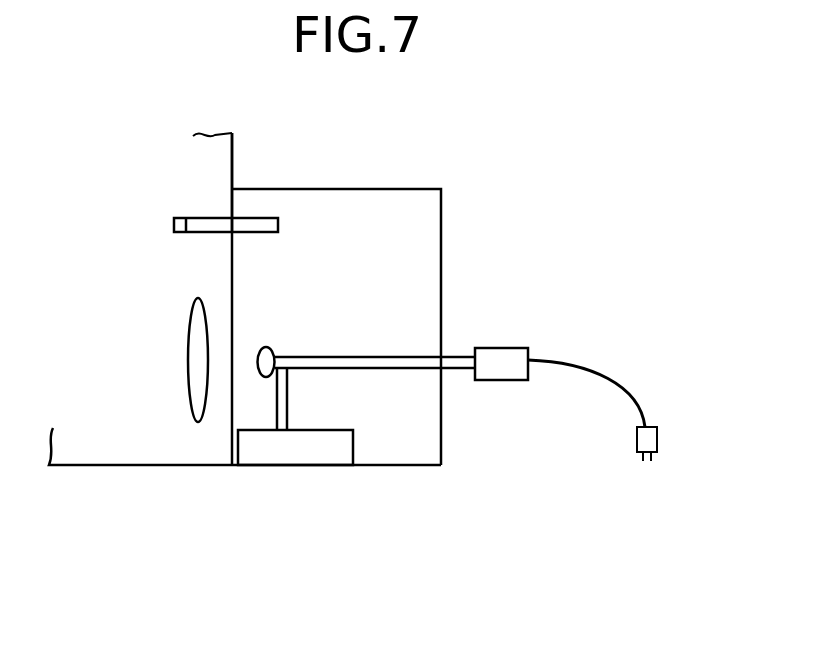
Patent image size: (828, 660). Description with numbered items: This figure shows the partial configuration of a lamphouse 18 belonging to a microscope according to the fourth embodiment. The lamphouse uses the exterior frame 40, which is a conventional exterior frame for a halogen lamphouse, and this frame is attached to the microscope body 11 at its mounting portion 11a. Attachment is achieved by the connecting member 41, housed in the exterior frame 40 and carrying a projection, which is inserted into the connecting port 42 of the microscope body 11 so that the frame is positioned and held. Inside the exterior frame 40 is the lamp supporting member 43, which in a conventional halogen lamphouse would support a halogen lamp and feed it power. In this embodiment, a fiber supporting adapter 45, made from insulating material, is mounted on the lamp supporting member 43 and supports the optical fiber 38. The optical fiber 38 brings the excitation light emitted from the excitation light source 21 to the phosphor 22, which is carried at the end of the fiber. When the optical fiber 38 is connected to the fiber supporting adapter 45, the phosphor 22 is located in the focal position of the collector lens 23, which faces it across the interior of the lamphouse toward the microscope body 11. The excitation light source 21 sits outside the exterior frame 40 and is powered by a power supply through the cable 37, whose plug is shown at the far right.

The microscope body 11 is at (147, 469).
The mounting portion 11a is at (232, 434).
The lamphouse 18 is at (434, 143).
The excitation light source 21 is at (500, 348).
The phosphor 22 is at (267, 345).
The collector lens 23 is at (187, 360).
The cable 37 is at (598, 370).
The optical fiber 38 is at (342, 355).
The exterior frame 40 is at (353, 188).
The connecting member 41 is at (255, 232).
The connecting port 42 is at (174, 224).
The lamp supporting member 43 is at (353, 448).
The fiber supporting adapter 45 is at (287, 400).